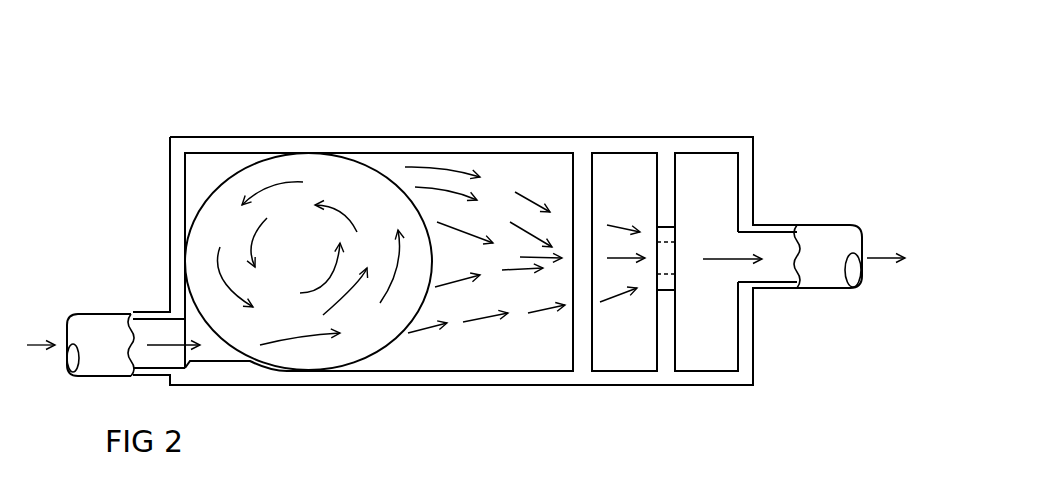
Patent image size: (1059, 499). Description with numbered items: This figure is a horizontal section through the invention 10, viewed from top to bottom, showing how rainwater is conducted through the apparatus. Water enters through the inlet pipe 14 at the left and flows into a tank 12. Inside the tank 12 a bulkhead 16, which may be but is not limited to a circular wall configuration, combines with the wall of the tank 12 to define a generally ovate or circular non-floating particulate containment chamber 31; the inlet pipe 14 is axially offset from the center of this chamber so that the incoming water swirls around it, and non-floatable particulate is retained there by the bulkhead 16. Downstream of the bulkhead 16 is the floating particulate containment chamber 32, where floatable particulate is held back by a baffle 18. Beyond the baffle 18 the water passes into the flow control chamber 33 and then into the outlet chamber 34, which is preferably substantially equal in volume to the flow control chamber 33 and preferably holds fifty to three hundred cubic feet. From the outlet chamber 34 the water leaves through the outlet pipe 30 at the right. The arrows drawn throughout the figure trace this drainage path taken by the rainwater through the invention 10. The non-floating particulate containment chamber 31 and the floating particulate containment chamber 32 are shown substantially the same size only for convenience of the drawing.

The invention 10 is at (208, 57).
The tank 12 is at (252, 138).
The inlet pipe 14 is at (107, 312).
The bulkhead 16 is at (375, 172).
The baffle 18 is at (592, 356).
The outlet pipe 30 is at (823, 225).
The non-floating particulate containment chamber 31 is at (303, 265).
The floating particulate containment chamber 32 is at (527, 160).
The flow control chamber 33 is at (628, 158).
The outlet chamber 34 is at (714, 158).